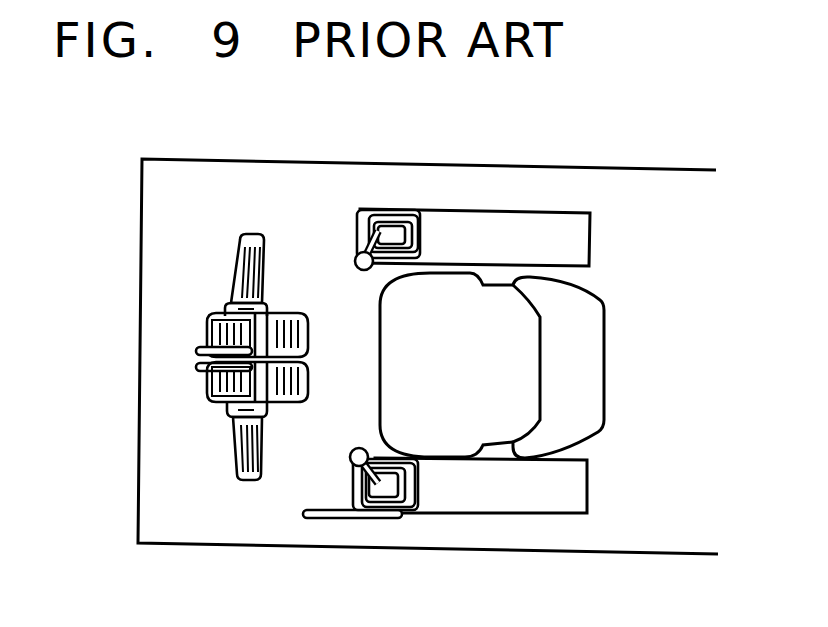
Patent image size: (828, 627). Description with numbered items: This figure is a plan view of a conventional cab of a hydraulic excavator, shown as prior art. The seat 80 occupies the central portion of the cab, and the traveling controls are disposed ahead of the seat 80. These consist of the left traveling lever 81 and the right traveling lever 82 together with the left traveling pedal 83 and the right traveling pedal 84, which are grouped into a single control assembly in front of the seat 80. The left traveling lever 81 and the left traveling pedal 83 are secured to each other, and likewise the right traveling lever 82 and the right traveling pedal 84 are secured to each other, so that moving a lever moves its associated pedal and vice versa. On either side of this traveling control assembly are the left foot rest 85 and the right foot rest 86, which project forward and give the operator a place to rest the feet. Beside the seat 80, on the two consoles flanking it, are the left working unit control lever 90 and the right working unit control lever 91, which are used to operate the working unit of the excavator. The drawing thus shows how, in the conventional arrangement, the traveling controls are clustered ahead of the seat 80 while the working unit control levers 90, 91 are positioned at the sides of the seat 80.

The seat 80 is at (470, 297).
The left traveling lever 81 is at (197, 366).
The right traveling lever 82 is at (200, 350).
The left traveling pedal 83 is at (215, 385).
The right traveling pedal 84 is at (207, 330).
The left foot rest 85 is at (237, 453).
The right foot rest 86 is at (247, 268).
The left working unit control lever 90 is at (353, 463).
The right working unit control lever 91 is at (362, 225).